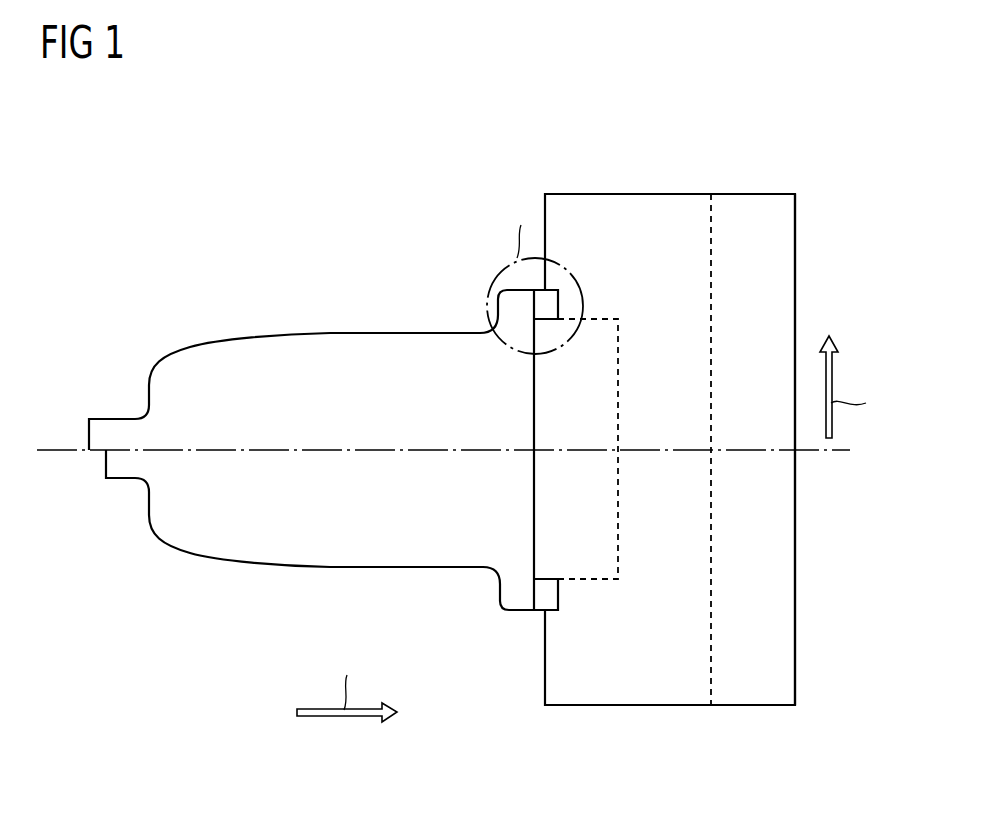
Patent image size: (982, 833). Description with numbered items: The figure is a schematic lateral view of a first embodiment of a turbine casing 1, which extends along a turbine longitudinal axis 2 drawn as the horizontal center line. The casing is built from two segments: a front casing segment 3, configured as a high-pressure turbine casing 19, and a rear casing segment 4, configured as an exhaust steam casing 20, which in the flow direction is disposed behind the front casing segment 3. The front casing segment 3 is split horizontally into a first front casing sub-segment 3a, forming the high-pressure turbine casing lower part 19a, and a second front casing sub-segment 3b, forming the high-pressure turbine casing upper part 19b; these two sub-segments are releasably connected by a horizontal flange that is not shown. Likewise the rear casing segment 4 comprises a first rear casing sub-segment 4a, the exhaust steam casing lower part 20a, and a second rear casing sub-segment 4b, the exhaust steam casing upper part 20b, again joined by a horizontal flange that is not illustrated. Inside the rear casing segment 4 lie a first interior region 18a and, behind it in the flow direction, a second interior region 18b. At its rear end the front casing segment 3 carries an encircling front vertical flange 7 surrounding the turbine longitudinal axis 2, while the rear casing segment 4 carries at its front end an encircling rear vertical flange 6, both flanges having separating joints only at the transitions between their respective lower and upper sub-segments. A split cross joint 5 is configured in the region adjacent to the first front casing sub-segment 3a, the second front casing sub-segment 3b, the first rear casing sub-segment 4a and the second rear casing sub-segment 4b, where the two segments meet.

The turbine casing 1 is at (373, 130).
The turbine longitudinal axis 2 is at (64, 449).
The front casing segment 3 is at (310, 403).
The high-pressure turbine casing 19 is at (341, 265).
The first front casing sub-segment 3a is at (316, 571).
The high-pressure turbine casing lower part 19a is at (236, 554).
The second front casing sub-segment 3b is at (314, 334).
The high-pressure turbine casing upper part 19b is at (242, 354).
The rear casing segment 4 is at (706, 425).
The exhaust steam casing 20 is at (683, 170).
The first rear casing sub-segment 4a is at (670, 611).
The exhaust steam casing lower part 20a is at (594, 620).
The second rear casing sub-segment 4b is at (670, 292).
The exhaust steam casing upper part 20b is at (604, 282).
The split cross joint 5 is at (525, 441).
The rear vertical flange 6 is at (551, 290).
The front vertical flange 7 is at (518, 290).
The first interior region 18a is at (608, 506).
The second interior region 18b is at (786, 540).